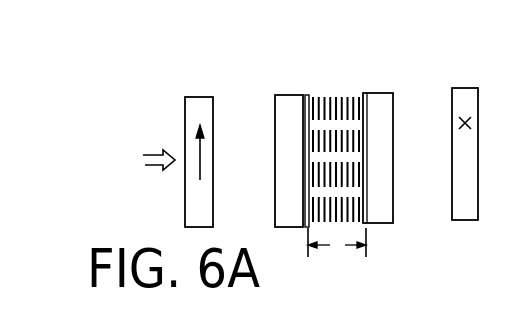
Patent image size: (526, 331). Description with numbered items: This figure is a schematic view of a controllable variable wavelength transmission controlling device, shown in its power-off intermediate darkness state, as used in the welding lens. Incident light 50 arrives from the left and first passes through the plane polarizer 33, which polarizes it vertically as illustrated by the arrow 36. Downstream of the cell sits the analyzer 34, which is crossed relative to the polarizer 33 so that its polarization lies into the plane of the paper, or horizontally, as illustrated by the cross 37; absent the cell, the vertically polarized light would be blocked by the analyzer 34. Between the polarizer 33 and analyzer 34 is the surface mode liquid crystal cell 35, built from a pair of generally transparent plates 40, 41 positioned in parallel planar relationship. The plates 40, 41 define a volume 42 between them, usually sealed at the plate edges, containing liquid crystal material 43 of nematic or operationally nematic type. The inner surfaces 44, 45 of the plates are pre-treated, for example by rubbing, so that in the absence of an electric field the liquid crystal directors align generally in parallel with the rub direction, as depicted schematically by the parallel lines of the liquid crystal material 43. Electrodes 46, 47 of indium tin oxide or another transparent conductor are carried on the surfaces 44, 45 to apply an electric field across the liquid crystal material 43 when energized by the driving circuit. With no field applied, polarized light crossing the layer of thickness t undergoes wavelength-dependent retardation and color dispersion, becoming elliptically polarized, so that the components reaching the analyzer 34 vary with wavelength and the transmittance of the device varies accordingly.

The plane polarizer 33 is at (197, 97).
The analyzer 34 is at (465, 88).
The surface mode liquid crystal cell 35 is at (290, 29).
The arrow 36 is at (200, 153).
The cross 37 is at (477, 118).
The plate 40 is at (285, 95).
The plate 41 is at (393, 167).
The volume 42 is at (361, 108).
The liquid crystal material 43 is at (345, 102).
The surface of plate 44 is at (307, 82).
The surface of plate 45 is at (377, 235).
The electrode 46 is at (316, 97).
The electrode 47 is at (362, 147).
The incident light 50 is at (152, 155).